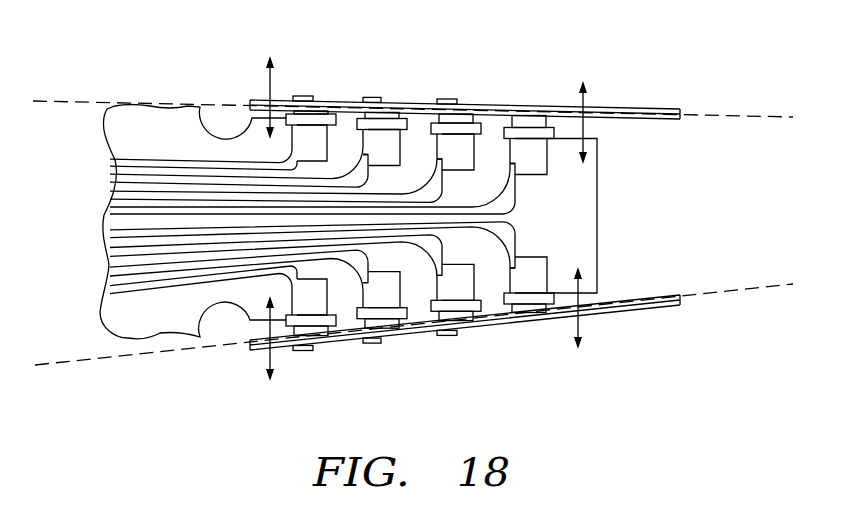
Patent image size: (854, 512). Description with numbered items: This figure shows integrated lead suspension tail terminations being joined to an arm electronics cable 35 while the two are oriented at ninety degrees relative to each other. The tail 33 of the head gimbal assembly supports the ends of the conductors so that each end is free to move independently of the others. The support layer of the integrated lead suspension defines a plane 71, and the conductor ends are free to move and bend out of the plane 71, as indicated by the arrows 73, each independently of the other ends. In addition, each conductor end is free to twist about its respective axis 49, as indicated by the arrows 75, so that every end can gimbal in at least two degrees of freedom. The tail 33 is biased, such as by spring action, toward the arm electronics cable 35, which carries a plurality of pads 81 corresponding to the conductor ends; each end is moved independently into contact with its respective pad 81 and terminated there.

The plane 71 is at (62, 101).
The arrows 73 is at (266, 86).
The arrows 75 is at (432, 91).
The axis 49 is at (459, 116).
The tail 33 is at (657, 97).
The arm electronics cable 35 is at (655, 199).
The pads 81 is at (538, 167).